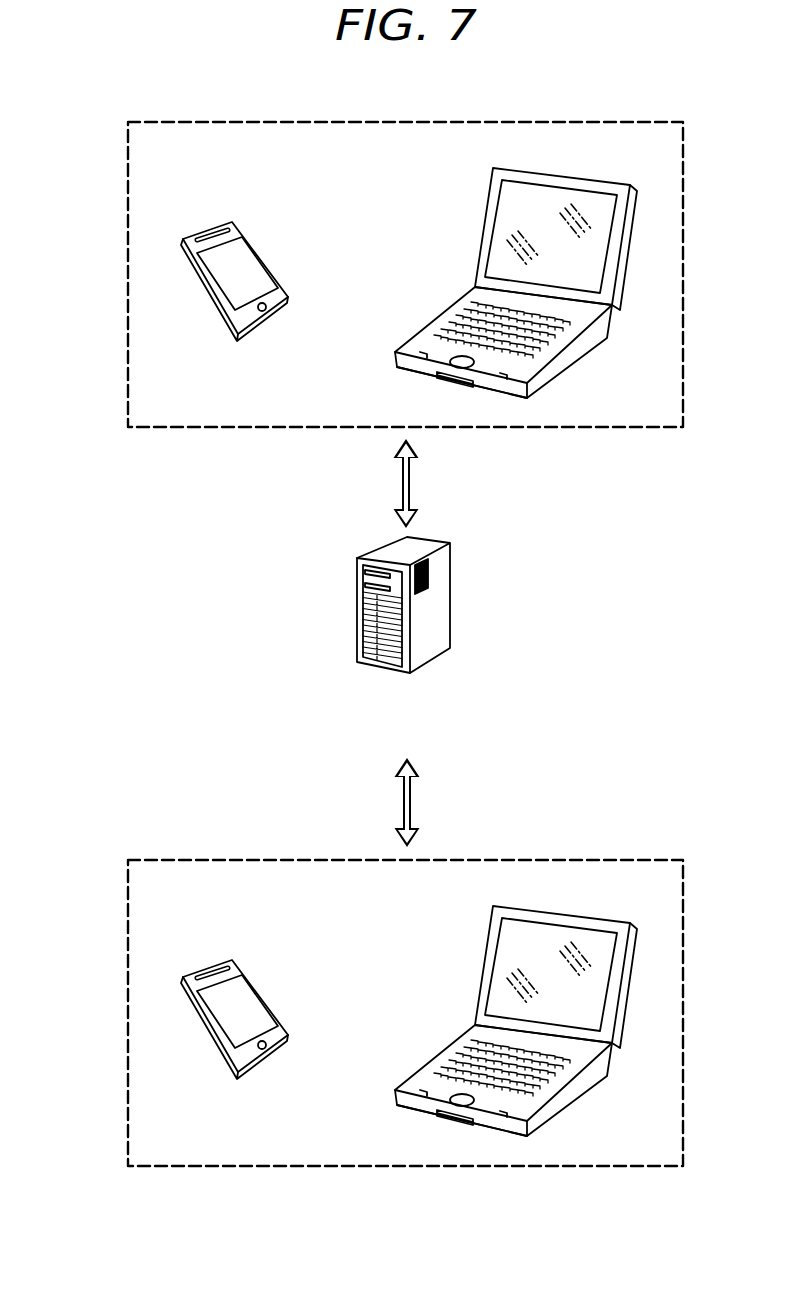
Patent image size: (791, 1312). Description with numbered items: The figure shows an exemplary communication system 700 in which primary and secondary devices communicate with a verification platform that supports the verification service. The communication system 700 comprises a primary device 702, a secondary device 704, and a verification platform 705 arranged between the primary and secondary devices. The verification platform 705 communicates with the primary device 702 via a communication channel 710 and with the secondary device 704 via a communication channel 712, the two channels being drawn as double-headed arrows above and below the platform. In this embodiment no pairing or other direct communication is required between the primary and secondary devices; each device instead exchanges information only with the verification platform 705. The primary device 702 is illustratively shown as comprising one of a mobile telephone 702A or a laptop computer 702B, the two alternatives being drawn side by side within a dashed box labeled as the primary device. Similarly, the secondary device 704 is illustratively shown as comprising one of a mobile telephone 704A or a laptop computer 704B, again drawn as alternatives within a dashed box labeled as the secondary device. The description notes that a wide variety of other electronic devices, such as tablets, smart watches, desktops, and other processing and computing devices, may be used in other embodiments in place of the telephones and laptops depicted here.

The communication system 700 is at (607, 102).
The primary device 702 is at (128, 135).
The mobile telephone 702A is at (250, 243).
The laptop computer 702B is at (575, 175).
The secondary device 704 is at (128, 873).
The mobile telephone 704A is at (250, 981).
The laptop computer 704B is at (575, 913).
The verification platform 705 is at (452, 600).
The communication channel 710 is at (403, 478).
The communication channel 712 is at (402, 802).